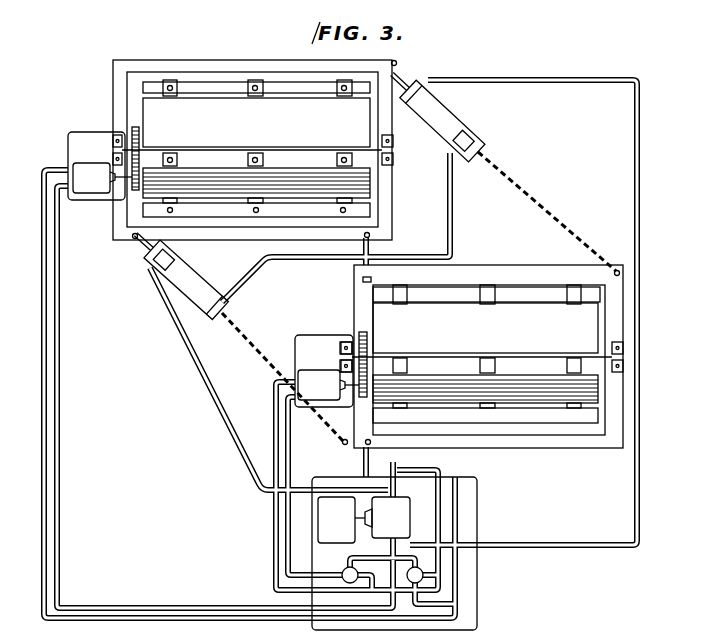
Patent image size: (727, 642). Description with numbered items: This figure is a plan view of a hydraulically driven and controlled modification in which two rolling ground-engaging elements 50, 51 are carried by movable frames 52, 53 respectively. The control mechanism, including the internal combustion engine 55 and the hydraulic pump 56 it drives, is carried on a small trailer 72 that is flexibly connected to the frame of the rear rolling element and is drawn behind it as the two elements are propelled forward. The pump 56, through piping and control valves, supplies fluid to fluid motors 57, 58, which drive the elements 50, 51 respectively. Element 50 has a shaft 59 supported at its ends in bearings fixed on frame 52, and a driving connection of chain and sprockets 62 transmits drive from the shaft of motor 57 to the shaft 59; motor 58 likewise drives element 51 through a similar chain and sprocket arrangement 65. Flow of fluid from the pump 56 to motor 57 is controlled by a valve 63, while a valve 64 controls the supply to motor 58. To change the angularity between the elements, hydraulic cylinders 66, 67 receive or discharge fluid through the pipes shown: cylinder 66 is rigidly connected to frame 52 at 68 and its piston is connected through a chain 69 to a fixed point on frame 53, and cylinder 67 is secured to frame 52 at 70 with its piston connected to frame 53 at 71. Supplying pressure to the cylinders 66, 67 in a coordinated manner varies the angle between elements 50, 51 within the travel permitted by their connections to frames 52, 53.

The ground-engaging element 50 is at (152, 107).
The ground-engaging element 51 is at (597, 390).
The frame 52 is at (196, 50).
The frame 53 is at (617, 293).
The internal combustion engine 55 is at (322, 520).
The hydraulic pump 56 is at (407, 500).
The fluid motor 57 is at (87, 172).
The fluid motor 58 is at (317, 373).
The shaft 59 is at (372, 145).
The chain and sprocket driving connection 62 is at (139, 135).
The valve 63 is at (424, 573).
The valve 64 is at (350, 570).
The chain and sprocket arrangement 65 is at (368, 337).
The hydraulic cylinder 66 is at (447, 118).
The hydraulic cylinder 67 is at (208, 283).
The connection point 68 is at (397, 63).
The chain 69 is at (548, 228).
The connection point 70 is at (133, 238).
The connection point 71 is at (340, 445).
The trailer 72 is at (480, 527).